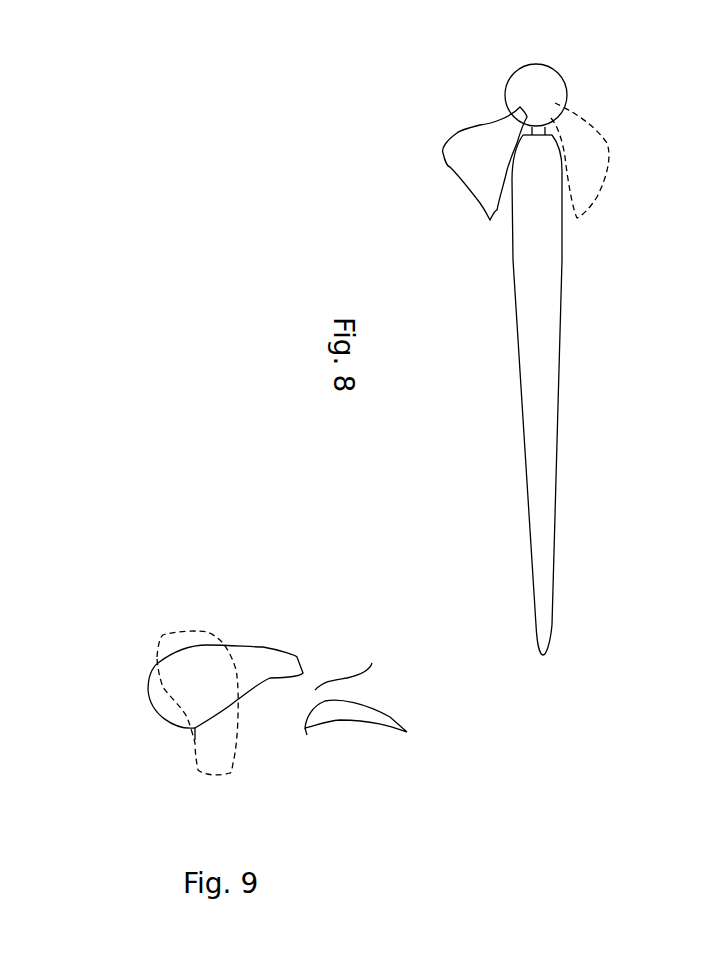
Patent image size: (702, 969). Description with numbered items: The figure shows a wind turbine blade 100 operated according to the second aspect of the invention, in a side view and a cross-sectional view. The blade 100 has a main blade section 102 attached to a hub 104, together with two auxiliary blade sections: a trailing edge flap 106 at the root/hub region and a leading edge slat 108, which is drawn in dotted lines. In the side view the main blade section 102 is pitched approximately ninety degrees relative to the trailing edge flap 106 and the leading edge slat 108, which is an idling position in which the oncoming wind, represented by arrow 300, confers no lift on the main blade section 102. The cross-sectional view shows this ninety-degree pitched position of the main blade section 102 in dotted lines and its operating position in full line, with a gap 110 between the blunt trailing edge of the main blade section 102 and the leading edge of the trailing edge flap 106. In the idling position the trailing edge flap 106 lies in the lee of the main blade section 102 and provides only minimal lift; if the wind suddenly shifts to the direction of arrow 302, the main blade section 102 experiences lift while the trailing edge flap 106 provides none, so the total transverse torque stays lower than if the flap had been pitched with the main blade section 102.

In FIG. 8, the blade 100 is at (630, 124).
In FIG. 8, the main blade section 102 is at (538, 455).
In FIG. 9, the main blade section 102 is at (258, 658).
In FIG. 8, the hub 104 is at (533, 82).
In FIG. 8, the trailing edge flap 106 is at (478, 170).
In FIG. 9, the trailing edge flap 106 is at (375, 718).
In FIG. 8, the leading edge slat 108 is at (593, 185).
In FIG. 9, the gap 110 is at (349, 668).
In FIG. 9, the oncoming wind 300 is at (133, 706).
In FIG. 9, the changed wind direction 302 is at (166, 614).